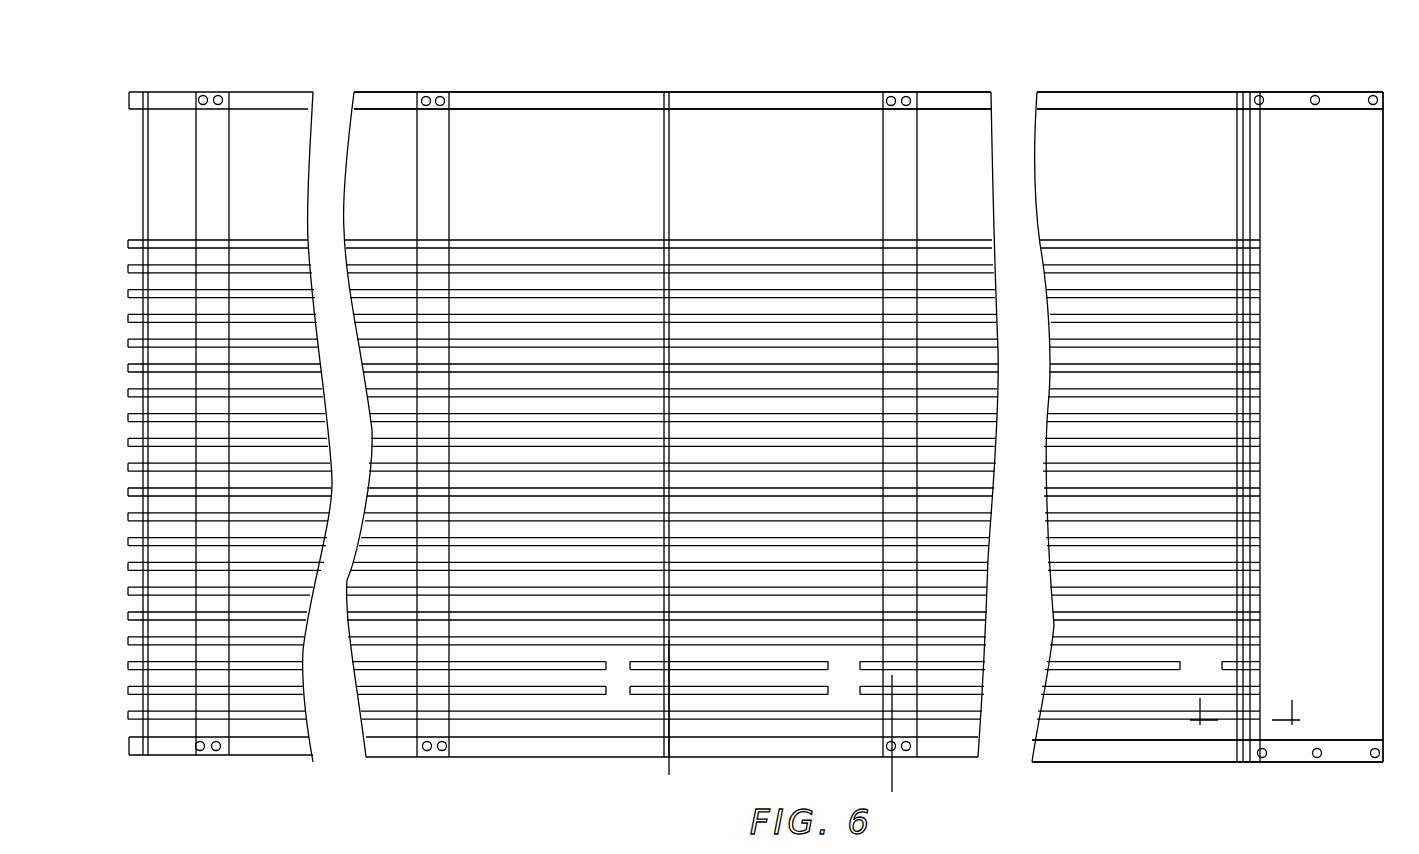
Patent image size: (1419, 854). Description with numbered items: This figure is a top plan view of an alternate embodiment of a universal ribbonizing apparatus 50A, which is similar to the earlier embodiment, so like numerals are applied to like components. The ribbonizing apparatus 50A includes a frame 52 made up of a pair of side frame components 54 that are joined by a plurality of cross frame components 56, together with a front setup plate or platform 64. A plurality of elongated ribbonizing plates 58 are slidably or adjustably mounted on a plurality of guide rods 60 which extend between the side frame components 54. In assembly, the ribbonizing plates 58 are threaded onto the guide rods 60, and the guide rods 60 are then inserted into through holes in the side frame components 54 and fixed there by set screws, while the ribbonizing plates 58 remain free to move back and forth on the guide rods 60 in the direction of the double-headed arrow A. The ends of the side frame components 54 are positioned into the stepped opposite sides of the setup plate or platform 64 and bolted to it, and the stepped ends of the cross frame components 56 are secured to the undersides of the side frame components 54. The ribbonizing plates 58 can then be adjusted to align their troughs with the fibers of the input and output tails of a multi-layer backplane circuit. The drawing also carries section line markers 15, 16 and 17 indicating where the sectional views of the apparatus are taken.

The ribbonizing apparatus 50A is at (800, 52).
The frame 52 is at (1078, 94).
The side frame components 54 is at (537, 95).
The cross frame components 56 is at (210, 140).
The ribbonizing plates 58 is at (517, 435).
The guide rods 60 is at (148, 132).
The setup plate or platform 64 is at (1292, 123).
The section line 15 is at (1249, 690).
The section line 16 is at (905, 785).
The section line 17 is at (690, 680).
The double-headed arrow A is at (783, 240).